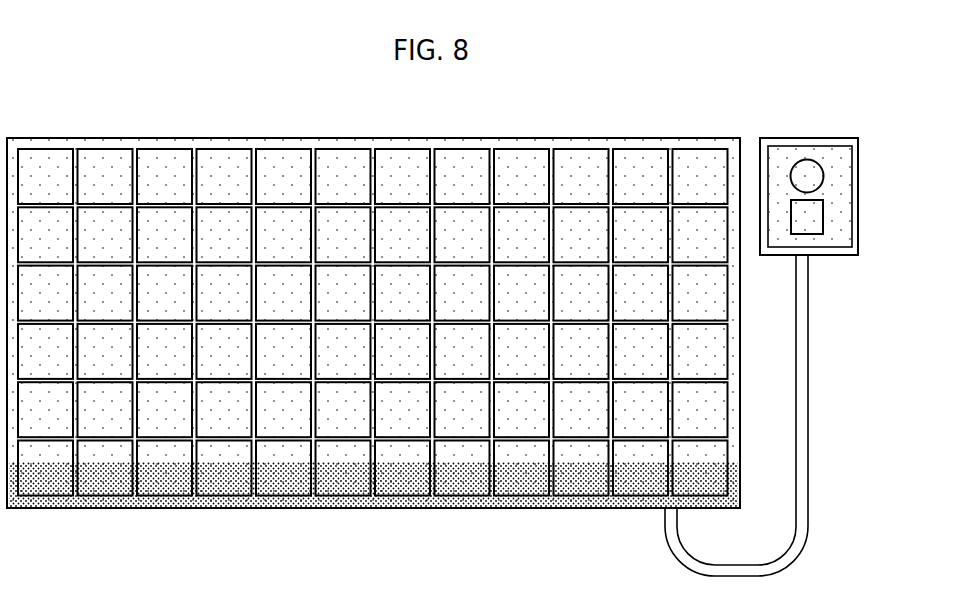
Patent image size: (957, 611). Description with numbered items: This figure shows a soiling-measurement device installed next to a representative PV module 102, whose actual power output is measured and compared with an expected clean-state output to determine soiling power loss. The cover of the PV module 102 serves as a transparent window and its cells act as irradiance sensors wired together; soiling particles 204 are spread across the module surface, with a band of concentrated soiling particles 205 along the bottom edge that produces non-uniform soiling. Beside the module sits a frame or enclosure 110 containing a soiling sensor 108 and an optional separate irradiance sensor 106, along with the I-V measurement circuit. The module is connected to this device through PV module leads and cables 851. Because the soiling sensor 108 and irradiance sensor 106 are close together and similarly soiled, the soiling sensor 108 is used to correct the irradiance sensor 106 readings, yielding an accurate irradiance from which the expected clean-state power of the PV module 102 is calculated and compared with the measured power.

The PV module 102 is at (58, 138).
The soiling particles 204 is at (230, 157).
The concentrated soiling particles 205 is at (405, 477).
The frame or enclosure 110 is at (845, 258).
The soiling sensor 108 is at (826, 177).
The irradiance sensor 106 is at (826, 216).
The PV module leads and cables 851 is at (822, 443).